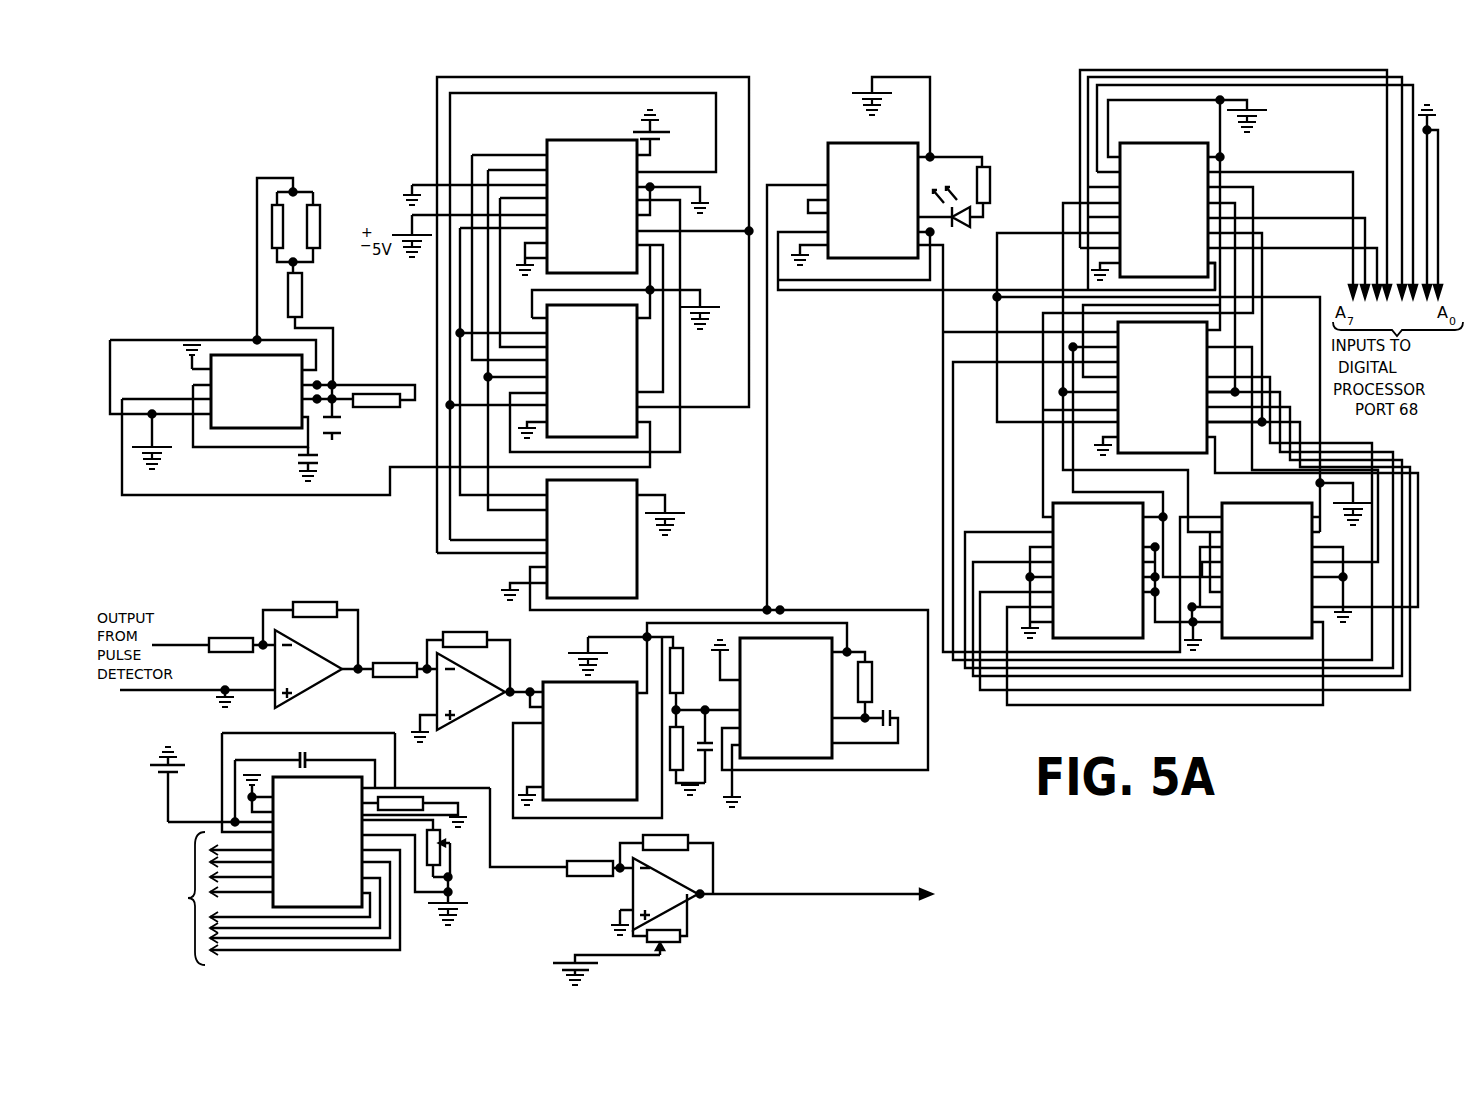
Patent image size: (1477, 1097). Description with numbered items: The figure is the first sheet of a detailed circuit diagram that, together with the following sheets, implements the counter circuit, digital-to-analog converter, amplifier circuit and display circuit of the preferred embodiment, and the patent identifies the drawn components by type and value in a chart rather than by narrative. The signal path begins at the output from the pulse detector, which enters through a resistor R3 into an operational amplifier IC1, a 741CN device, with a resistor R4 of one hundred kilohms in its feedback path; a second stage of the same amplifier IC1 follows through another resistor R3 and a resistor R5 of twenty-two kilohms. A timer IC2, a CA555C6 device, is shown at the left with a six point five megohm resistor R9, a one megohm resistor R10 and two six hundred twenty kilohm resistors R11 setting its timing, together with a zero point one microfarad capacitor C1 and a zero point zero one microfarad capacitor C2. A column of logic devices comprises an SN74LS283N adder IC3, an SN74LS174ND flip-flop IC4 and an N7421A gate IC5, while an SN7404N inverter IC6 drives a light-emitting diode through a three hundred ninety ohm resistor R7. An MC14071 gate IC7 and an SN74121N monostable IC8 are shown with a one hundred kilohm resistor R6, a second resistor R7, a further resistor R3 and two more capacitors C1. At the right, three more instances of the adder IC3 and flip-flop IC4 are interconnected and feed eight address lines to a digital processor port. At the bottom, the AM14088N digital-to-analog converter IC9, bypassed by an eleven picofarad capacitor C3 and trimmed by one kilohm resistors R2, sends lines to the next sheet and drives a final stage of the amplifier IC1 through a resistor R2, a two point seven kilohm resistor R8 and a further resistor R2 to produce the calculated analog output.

The operational amplifier IC1 is at (585, 800).
The timer integrated circuit IC2 is at (380, 416).
The adder integrated circuit IC3 is at (941, 402).
The flip-flop integrated circuit IC4 is at (978, 380).
The gate integrated circuit IC5 is at (682, 423).
The inverter integrated circuit IC6 is at (994, 363).
The gate integrated circuit IC7 is at (682, 720).
The monostable integrated circuit IC8 is at (754, 722).
The digital-to-analog converter integrated circuit IC9 is at (308, 849).
The resistor R2 is at (537, 865).
The resistor R3 is at (553, 669).
The resistor R4 is at (315, 600).
The resistor R5 is at (465, 629).
The resistor R6 is at (689, 681).
The resistor R7 is at (650, 750).
The resistor R8 is at (670, 834).
The resistor R9 is at (376, 412).
The resistor R10 is at (310, 329).
The resistor R11 is at (299, 259).
The capacitor C1 is at (712, 778).
The capacitor C2 is at (319, 464).
The capacitor C3 is at (313, 755).